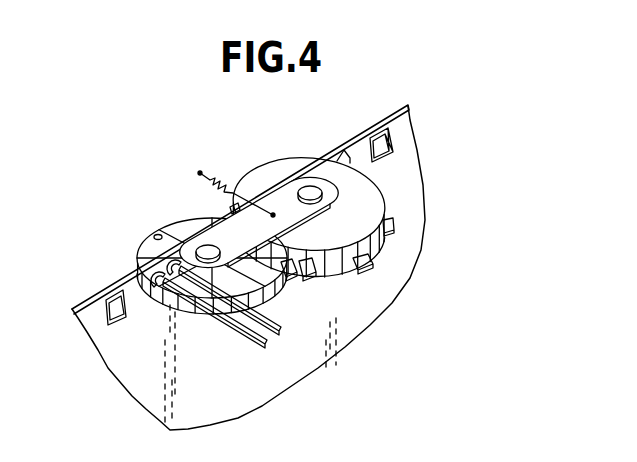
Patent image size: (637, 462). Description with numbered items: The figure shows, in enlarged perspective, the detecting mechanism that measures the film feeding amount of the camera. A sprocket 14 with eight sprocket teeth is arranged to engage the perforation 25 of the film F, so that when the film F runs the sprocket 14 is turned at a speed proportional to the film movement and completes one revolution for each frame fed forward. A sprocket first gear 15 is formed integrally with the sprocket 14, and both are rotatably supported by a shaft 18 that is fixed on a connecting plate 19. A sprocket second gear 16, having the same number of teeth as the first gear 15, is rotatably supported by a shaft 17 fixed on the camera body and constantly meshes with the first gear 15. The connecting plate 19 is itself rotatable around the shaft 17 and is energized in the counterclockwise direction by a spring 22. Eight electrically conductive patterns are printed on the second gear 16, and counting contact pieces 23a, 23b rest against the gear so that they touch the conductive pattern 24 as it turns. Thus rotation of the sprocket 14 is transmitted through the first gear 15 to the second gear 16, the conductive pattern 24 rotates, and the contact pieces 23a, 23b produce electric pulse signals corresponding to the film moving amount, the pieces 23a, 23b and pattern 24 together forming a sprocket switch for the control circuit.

The film F is at (118, 383).
The sprocket 14 is at (372, 250).
The sprocket first gear 15 is at (370, 205).
The sprocket second gear 16 is at (180, 222).
The shaft 17 is at (207, 248).
The shaft 18 is at (310, 186).
The connecting plate 19 is at (281, 192).
The spring 22 is at (232, 178).
The counting contact piece 23a is at (250, 327).
The counting contact piece 23b is at (263, 317).
The conductive pattern 24 is at (158, 235).
The perforation 25 is at (379, 142).